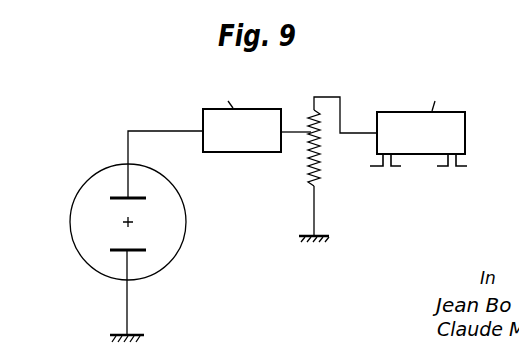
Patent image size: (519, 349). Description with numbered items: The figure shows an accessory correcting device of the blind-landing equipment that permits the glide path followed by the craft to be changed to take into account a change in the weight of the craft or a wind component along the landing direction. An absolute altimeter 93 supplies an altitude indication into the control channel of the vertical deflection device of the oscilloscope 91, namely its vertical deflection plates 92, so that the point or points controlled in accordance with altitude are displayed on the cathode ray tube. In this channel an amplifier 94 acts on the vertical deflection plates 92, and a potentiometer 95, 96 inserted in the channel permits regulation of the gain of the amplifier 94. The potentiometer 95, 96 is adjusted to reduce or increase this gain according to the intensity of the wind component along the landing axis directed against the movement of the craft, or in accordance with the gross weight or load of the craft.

The oscilloscope 91 is at (73, 203).
The vertical deflection plates 92 is at (133, 249).
The absolute altimeter 93 is at (432, 127).
The amplifier 94 is at (234, 120).
The potentiometer 95 is at (317, 161).
The potentiometer 96 is at (313, 127).